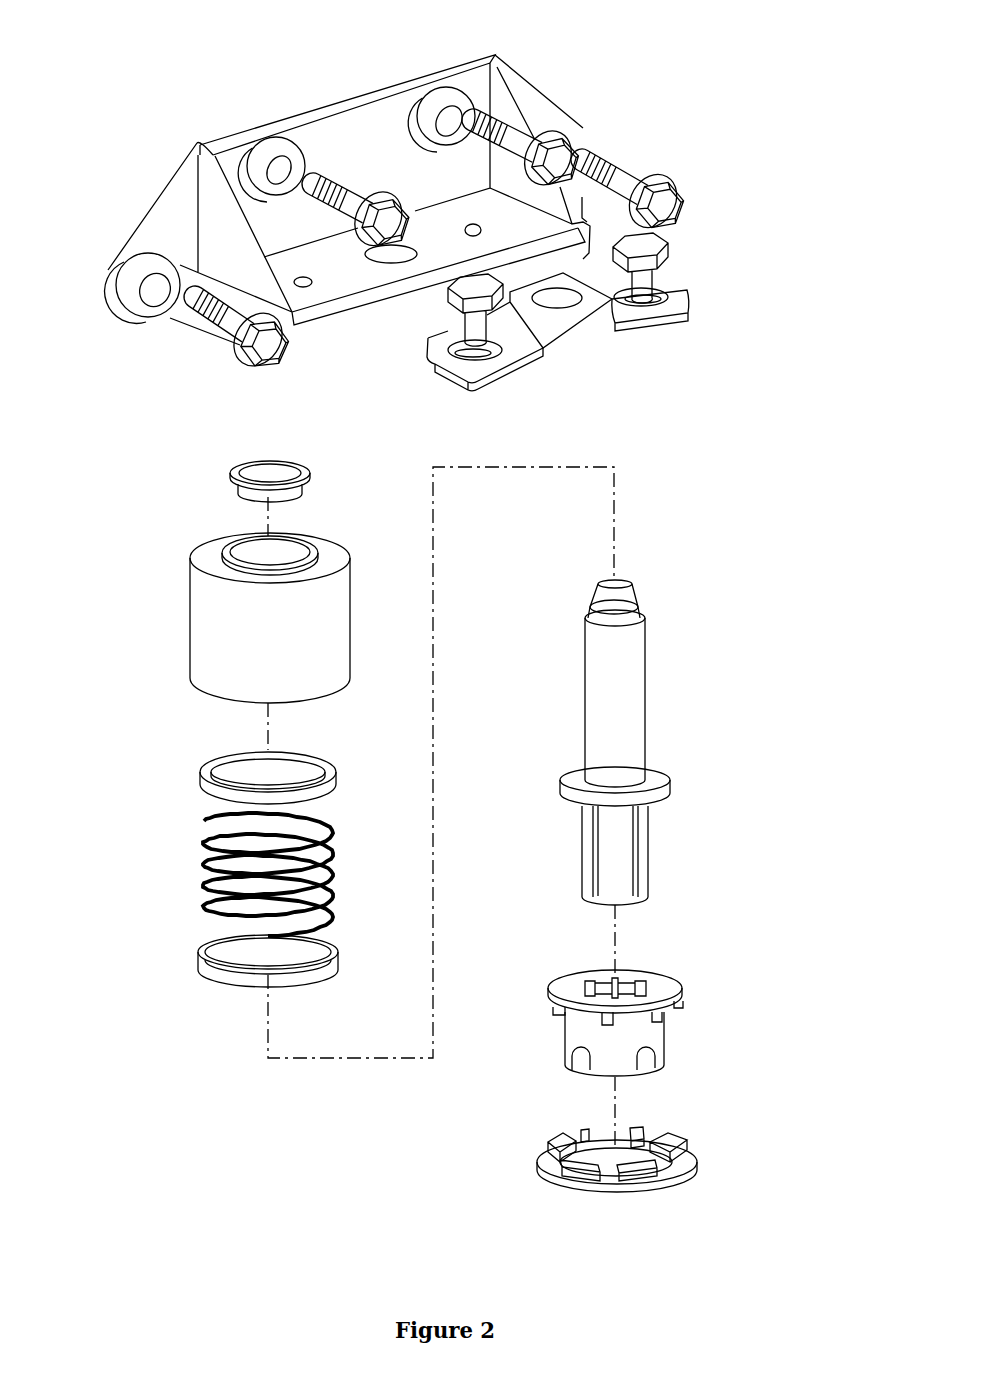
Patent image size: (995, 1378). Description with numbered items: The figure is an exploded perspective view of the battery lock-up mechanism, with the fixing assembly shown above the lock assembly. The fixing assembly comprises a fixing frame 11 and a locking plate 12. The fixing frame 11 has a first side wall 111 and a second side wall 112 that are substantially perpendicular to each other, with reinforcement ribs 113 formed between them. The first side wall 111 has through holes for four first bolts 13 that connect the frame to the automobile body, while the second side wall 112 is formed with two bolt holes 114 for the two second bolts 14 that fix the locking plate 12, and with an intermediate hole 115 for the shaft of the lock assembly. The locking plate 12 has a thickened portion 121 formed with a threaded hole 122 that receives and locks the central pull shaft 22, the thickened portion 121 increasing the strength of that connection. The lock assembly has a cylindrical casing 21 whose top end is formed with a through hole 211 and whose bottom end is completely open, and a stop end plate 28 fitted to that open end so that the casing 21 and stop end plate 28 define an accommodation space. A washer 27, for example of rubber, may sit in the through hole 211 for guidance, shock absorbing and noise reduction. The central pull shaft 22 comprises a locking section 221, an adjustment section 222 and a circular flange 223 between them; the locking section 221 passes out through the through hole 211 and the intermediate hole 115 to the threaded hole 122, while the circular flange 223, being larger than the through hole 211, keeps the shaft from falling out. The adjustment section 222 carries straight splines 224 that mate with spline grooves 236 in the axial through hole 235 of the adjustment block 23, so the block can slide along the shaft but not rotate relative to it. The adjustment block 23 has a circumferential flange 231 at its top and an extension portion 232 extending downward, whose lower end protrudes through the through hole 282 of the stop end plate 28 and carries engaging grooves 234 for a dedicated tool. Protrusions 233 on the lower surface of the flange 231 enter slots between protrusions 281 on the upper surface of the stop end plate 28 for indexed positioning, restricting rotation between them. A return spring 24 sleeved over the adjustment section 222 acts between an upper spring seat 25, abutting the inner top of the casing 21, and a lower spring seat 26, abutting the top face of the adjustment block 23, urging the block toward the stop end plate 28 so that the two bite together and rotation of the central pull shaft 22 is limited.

The fixing frame 11 is at (398, 221).
The first side wall 111 is at (360, 140).
The second side wall 112 is at (507, 283).
The reinforcement ribs 113 is at (222, 225).
The bolt holes 114 is at (305, 286).
The intermediate hole 115 is at (398, 257).
The locking plate 12 is at (606, 338).
The thickened portion 121 is at (590, 327).
The threaded hole 122 is at (557, 298).
The first bolts 13 is at (552, 175).
The second bolts 14 is at (645, 245).
The casing 21 is at (224, 605).
The through hole 211 is at (252, 552).
The central pull shaft 22 is at (649, 742).
The locking section 221 is at (685, 583).
The adjustment section 222 is at (615, 849).
The circular flange 223 is at (660, 780).
The straight splines 224 is at (597, 868).
The adjustment block 23 is at (619, 1027).
The circumferential flange 231 is at (660, 992).
The extension portion 232 is at (607, 1052).
The protrusions 233 is at (653, 1015).
The engaging grooves 234 is at (638, 1062).
The axial through hole 235 is at (602, 988).
The spline grooves 236 is at (642, 985).
The return spring 24 is at (205, 867).
The upper spring seat 25 is at (210, 788).
The lower spring seat 26 is at (220, 977).
The washer 27 is at (230, 473).
The stop end plate 28 is at (654, 1187).
The protrusions 281 is at (640, 1173).
The through hole 282 is at (633, 1155).